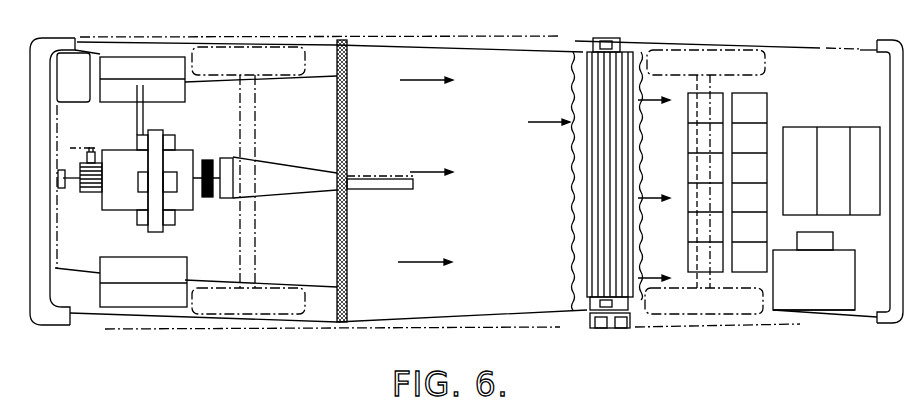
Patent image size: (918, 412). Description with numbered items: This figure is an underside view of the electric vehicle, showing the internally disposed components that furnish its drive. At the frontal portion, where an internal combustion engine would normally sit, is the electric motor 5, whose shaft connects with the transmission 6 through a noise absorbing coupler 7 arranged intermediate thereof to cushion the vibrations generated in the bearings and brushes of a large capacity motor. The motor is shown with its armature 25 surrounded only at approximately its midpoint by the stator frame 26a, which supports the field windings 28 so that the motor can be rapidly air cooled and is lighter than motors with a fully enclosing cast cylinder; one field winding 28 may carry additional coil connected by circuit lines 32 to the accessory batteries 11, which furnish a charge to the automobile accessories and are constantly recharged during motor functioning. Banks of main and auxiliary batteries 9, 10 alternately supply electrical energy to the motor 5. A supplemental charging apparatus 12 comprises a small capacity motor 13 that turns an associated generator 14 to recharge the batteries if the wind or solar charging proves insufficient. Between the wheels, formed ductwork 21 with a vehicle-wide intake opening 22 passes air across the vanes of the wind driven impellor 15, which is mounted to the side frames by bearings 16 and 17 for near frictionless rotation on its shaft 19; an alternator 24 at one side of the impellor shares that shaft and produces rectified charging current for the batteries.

The electric motor 5 is at (127, 214).
The transmission 6 is at (273, 192).
The noise absorbing coupler 7 is at (213, 197).
The main batteries 9 is at (713, 93).
The auxiliary batteries 10 is at (757, 93).
The accessory batteries 11 is at (123, 62).
The supplemental charging apparatus 12 is at (840, 307).
The small capacity motor 13 is at (823, 302).
The generator 14 is at (833, 242).
The wind driven impellor 15 is at (573, 63).
The bearing 16 is at (615, 48).
The bearing 17 is at (620, 328).
The impellor shaft 19 is at (597, 43).
The ductwork 21 is at (476, 63).
The intake opening 22 is at (349, 142).
The alternator 24 is at (595, 313).
The armature 25 is at (115, 210).
The frame 26a is at (177, 131).
The field windings 28 is at (126, 155).
The circuit lines 32 is at (145, 118).